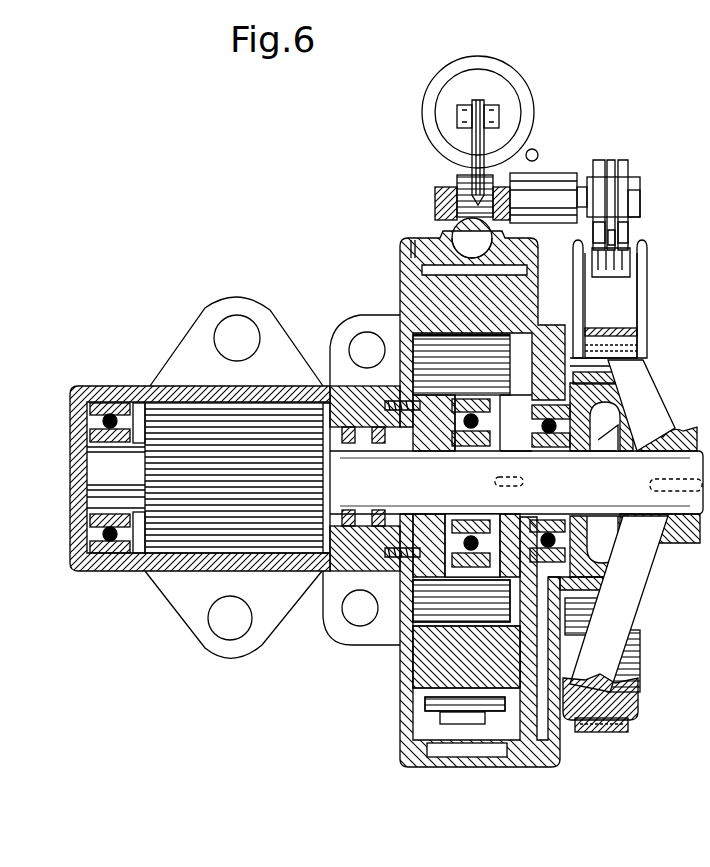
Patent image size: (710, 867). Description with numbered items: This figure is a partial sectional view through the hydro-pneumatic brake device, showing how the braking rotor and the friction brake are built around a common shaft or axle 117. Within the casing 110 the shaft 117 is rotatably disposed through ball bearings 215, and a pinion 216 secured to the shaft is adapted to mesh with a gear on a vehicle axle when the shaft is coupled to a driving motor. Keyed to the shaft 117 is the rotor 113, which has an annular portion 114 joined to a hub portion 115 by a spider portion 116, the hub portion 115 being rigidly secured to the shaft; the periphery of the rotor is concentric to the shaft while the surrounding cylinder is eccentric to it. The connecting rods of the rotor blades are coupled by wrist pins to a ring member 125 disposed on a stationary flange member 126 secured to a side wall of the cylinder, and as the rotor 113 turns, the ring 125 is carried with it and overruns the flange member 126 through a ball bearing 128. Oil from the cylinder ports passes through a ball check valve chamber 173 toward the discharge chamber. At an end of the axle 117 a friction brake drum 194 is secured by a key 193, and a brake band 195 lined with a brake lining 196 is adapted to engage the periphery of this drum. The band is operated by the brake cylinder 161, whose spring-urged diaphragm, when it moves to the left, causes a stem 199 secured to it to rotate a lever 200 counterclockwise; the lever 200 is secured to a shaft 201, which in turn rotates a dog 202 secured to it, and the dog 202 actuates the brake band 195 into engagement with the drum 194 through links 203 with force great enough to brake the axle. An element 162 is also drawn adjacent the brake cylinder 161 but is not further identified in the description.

The casing 110 is at (394, 697).
The rotor 113 is at (420, 293).
The annular portion 114 is at (411, 258).
The hub portion 115 is at (502, 433).
The spider portion 116 is at (522, 370).
The shaft or axle 117 is at (660, 467).
The ring member 125 is at (440, 545).
The stationary flange member 126 is at (410, 607).
The ball bearing 128 is at (387, 637).
The brake cylinder 161 is at (520, 92).
The pin 162 is at (538, 152).
The ball check valve chamber 173 is at (470, 238).
The key 193 is at (700, 528).
The friction brake drum 194 is at (612, 697).
The brake band 195 is at (615, 320).
The brake lining 196 is at (618, 336).
The stem 199 is at (466, 112).
The lever 200 is at (470, 150).
The shaft 201 is at (585, 192).
The dog 202 is at (630, 185).
The links 203 is at (630, 243).
The ball bearings 215 is at (118, 555).
The pinion 216 is at (197, 453).